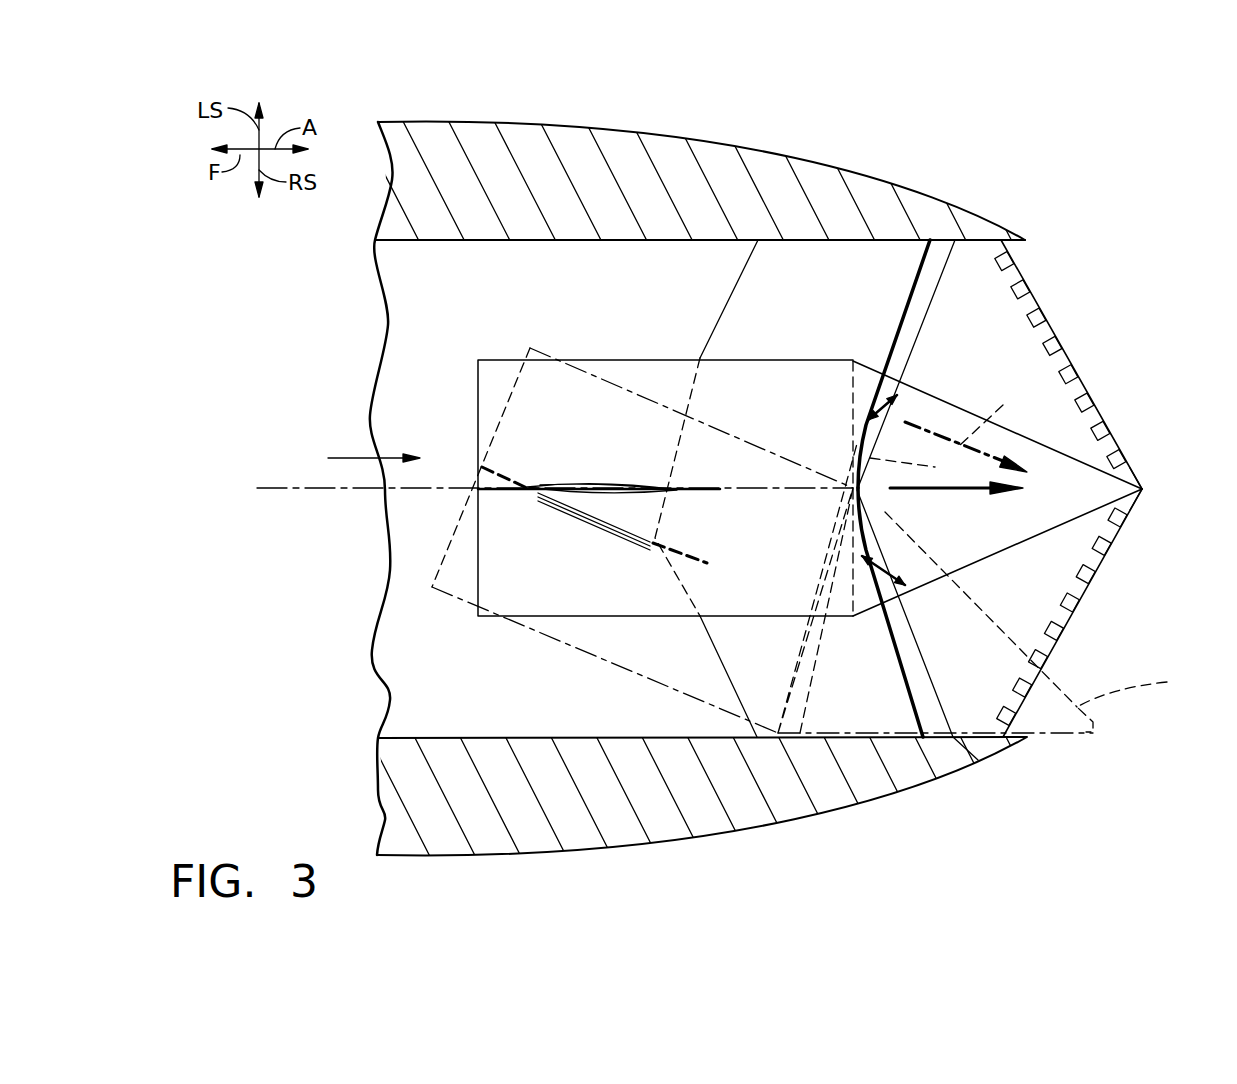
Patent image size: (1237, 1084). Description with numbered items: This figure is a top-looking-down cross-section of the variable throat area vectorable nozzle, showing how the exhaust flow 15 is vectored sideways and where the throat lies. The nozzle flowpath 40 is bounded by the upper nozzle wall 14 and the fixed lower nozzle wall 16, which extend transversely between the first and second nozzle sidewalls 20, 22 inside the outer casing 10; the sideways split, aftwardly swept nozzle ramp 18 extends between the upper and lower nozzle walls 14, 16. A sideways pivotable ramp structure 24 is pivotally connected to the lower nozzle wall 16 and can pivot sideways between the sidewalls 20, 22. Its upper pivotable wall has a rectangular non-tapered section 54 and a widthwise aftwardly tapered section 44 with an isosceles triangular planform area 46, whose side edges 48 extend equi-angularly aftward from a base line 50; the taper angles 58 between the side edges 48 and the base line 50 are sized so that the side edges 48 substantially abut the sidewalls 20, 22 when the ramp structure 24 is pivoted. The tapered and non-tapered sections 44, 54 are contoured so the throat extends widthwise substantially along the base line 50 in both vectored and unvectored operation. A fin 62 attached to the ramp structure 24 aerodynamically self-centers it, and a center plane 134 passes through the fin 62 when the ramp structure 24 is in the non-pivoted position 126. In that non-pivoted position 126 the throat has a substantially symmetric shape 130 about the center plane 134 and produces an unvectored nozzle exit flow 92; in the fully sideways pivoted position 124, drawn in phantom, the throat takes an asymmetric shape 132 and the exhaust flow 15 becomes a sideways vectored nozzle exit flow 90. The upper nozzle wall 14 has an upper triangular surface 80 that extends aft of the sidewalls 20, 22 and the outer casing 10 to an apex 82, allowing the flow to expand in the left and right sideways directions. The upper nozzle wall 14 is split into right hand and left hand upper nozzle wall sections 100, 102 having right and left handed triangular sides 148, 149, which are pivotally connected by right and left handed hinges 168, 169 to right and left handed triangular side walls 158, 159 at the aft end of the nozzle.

The outer casing 10 is at (603, 130).
The second nozzle sidewall 22 is at (440, 245).
The first nozzle sidewall 20 is at (485, 738).
The lower nozzle wall 16 is at (675, 275).
The center plane 134 is at (322, 490).
The exhaust flow 15 is at (355, 458).
The sideways pivotable ramp structure 24 is at (738, 358).
The nozzle flowpath 40 is at (608, 319).
The non-tapered section 54 is at (802, 382).
The fin 62 is at (602, 482).
The substantially symmetric shape 130 is at (920, 272).
The asymmetric shape 132 is at (795, 688).
The aftwardly swept nozzle ramp 18 is at (900, 288).
The side edges 48 is at (950, 402).
The isosceles triangular planform area 46 is at (965, 566).
The upper nozzle wall 14 is at (1037, 330).
The upper triangular surface 80 is at (1050, 356).
The right hand upper nozzle wall section 100 is at (983, 670).
The right handed hinge 168 is at (1110, 552).
The apex 82 is at (1147, 490).
The left handed triangular side 149 is at (1000, 282).
The left hand upper nozzle wall section 102 is at (993, 316).
The non-pivoted position 126 is at (933, 395).
The left handed triangular side wall 159 is at (1080, 384).
The left handed hinge 169 is at (1100, 430).
The right handed triangular side 148 is at (1060, 578).
The right handed triangular side wall 158 is at (1062, 620).
The fully sideways pivoted position 124 is at (994, 702).
The aftwardly tapered section 44 is at (1033, 478).
The taper angles 58 is at (880, 418).
The sideways vectored nozzle exit flow 90 is at (1005, 406).
The base line 50 is at (919, 467).
The unvectored nozzle exit flow 92 is at (943, 490).